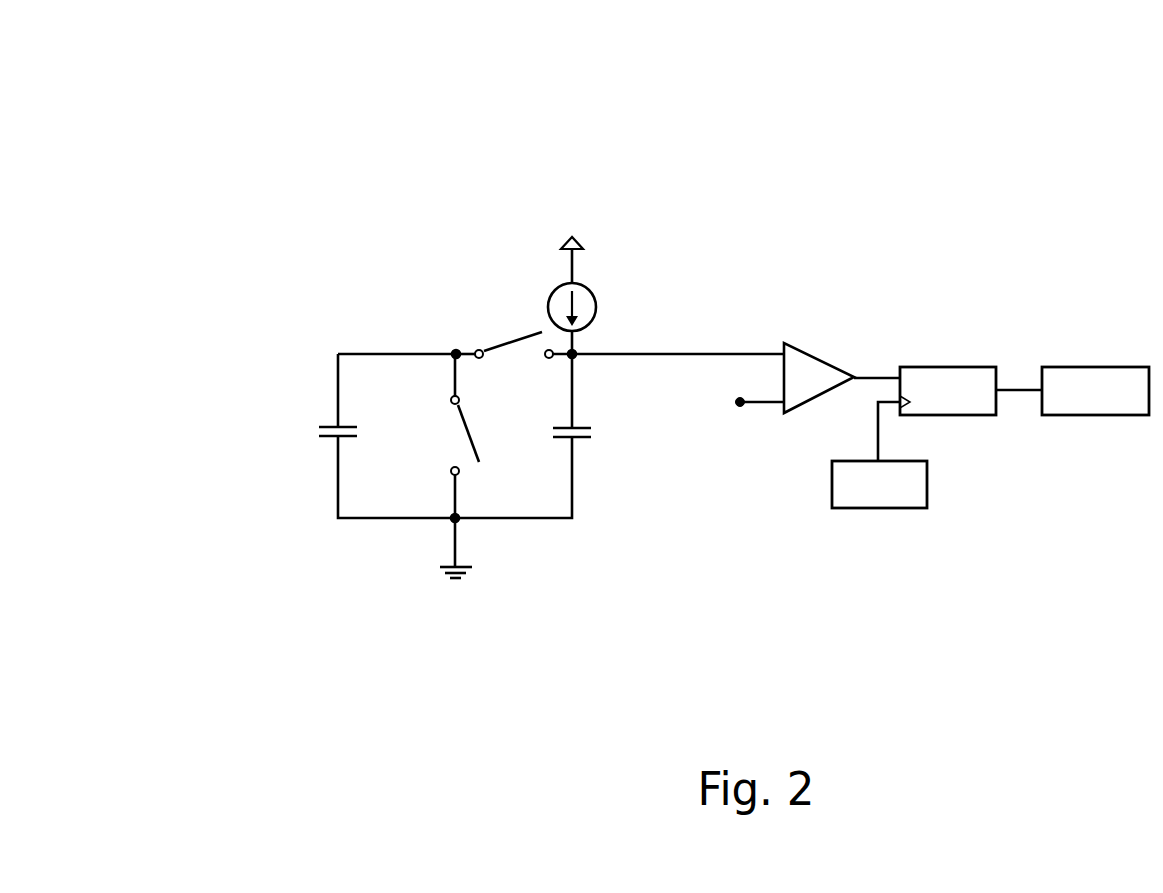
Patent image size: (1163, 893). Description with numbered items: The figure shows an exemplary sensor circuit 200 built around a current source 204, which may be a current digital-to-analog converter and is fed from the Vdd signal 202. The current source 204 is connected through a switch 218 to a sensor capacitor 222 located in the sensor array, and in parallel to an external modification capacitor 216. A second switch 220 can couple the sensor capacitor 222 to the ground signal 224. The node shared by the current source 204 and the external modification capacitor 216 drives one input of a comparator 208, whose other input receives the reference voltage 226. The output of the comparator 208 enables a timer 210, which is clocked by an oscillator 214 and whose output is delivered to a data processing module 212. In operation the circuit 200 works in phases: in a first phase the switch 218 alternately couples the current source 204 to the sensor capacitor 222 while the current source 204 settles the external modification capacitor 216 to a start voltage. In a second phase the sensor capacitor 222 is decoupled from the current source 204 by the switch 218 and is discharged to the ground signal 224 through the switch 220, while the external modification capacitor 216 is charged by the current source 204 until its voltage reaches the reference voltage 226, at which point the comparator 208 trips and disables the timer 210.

The sensor circuit 200 is at (210, 48).
The Vdd signal 202 is at (574, 232).
The current source 204 is at (598, 289).
The comparator 208 is at (806, 355).
The timer 210 is at (943, 367).
The data processing module 212 is at (1103, 367).
The oscillator 214 is at (928, 488).
The external modification capacitor 216 is at (603, 438).
The switch 218 is at (494, 348).
The switch 220 is at (467, 425).
The sensor capacitor 222 is at (282, 432).
The ground signal 224 is at (480, 579).
The reference voltage 226 is at (762, 422).